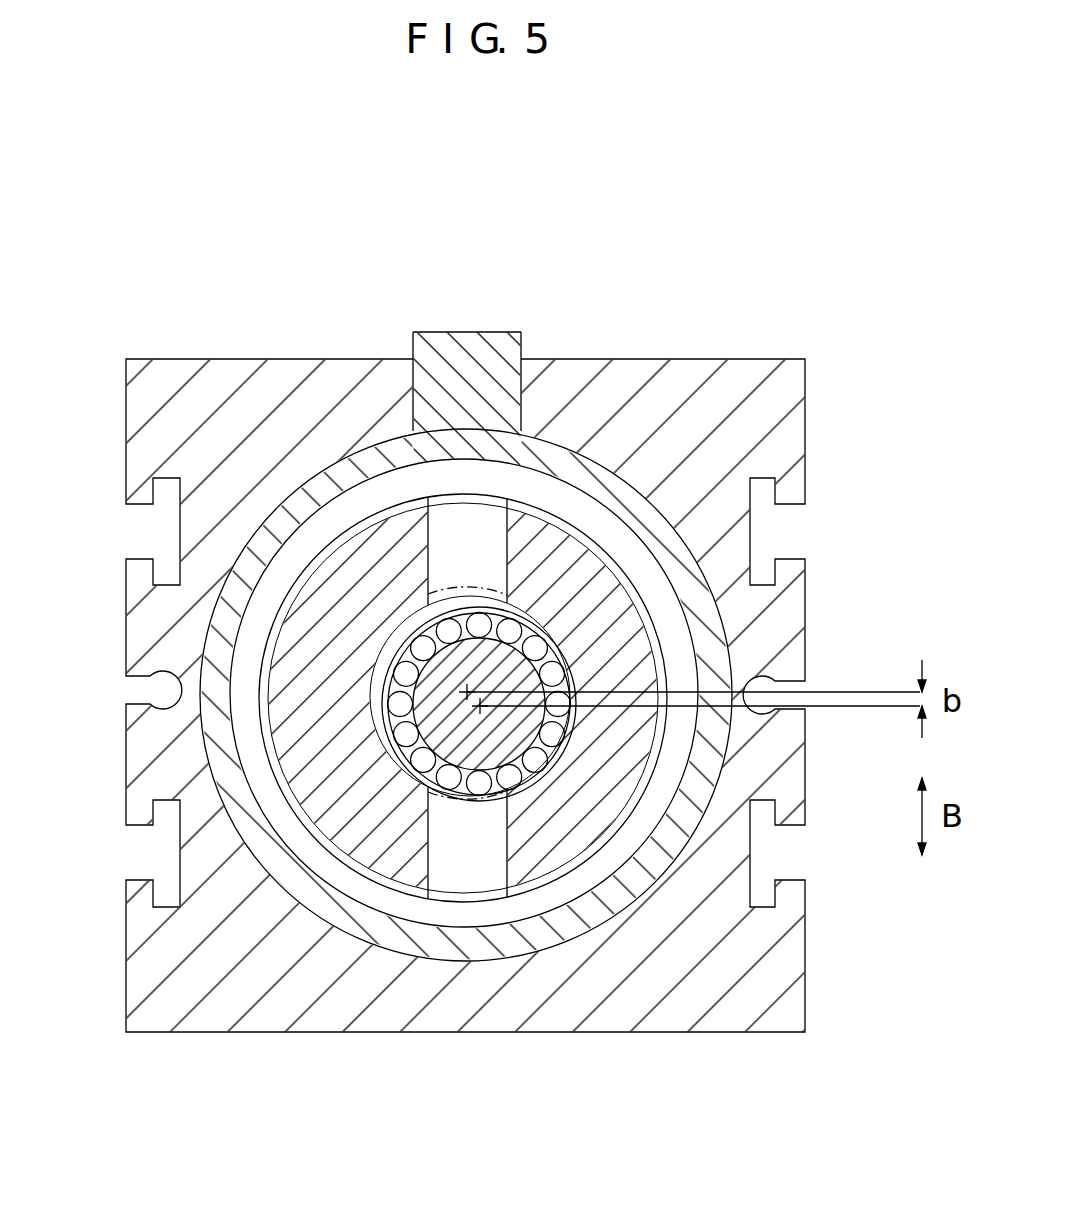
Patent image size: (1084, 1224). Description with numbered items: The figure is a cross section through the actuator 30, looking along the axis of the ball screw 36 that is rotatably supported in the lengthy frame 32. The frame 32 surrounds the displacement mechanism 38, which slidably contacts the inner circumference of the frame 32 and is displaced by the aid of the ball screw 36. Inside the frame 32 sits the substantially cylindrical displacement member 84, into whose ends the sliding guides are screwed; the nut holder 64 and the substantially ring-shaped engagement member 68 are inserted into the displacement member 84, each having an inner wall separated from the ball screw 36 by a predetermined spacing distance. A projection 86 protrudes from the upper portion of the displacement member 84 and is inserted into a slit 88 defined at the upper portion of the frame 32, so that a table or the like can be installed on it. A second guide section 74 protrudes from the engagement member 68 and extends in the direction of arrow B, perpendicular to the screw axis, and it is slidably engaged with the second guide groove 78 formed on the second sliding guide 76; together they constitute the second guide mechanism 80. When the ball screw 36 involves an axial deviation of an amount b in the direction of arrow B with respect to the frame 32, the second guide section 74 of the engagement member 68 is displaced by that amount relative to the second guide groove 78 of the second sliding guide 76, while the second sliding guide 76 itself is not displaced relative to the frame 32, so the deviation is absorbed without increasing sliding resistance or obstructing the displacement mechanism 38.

The actuator 30 is at (699, 159).
The frame 32 is at (447, 1017).
The ball screw 36 is at (540, 772).
The displacement mechanism 38 is at (293, 472).
The nut holder 64 is at (376, 665).
The engagement member 68 is at (613, 593).
The second guide section 74 is at (505, 523).
The second sliding guide 76 is at (577, 523).
The second guide groove 78 is at (540, 480).
The second guide mechanism 80 is at (595, 233).
The displacement member 84 is at (358, 450).
The projection 86 is at (443, 340).
The slit 88 is at (420, 352).